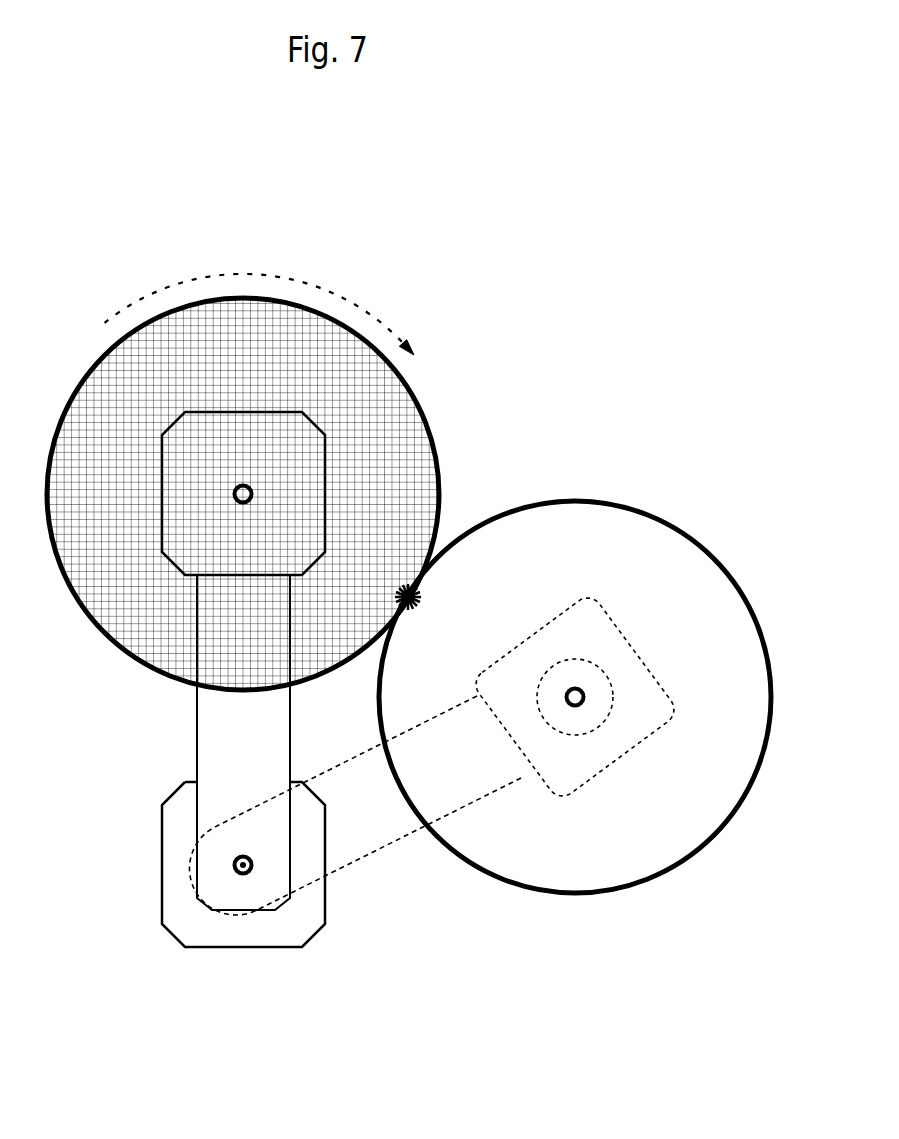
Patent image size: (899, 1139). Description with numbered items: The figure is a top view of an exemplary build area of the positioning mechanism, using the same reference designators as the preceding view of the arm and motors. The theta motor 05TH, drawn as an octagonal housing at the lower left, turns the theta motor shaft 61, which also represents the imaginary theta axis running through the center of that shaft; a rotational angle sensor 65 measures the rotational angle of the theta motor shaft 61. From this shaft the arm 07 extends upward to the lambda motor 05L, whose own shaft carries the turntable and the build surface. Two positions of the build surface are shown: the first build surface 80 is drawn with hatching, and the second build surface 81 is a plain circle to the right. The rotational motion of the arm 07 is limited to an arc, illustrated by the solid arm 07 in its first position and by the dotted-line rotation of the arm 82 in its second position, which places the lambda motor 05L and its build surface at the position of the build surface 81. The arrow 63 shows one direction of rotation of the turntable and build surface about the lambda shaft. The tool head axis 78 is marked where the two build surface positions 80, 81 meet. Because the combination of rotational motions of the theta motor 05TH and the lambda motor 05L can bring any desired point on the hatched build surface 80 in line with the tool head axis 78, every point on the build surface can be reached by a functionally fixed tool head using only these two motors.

The build surface 80 is at (426, 433).
The build surface 81 is at (527, 530).
The tool head axis 78 is at (422, 598).
The lambda motor 05L is at (178, 433).
The theta motor 05TH is at (196, 912).
The arm 07 is at (215, 742).
The dotted-line rotation of the arm 82 is at (378, 822).
The theta motor shaft 61 is at (254, 872).
The rotational angle sensor 65 is at (243, 876).
The direction of rotation of the turntable 63 is at (350, 306).